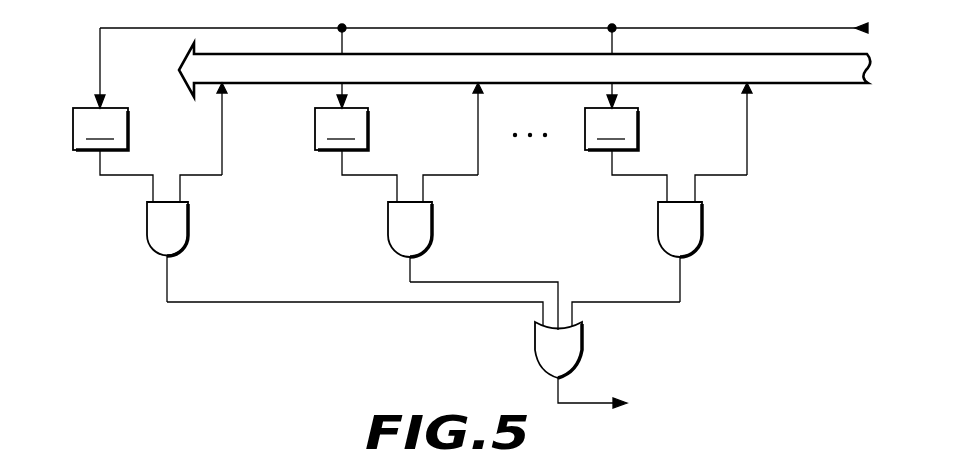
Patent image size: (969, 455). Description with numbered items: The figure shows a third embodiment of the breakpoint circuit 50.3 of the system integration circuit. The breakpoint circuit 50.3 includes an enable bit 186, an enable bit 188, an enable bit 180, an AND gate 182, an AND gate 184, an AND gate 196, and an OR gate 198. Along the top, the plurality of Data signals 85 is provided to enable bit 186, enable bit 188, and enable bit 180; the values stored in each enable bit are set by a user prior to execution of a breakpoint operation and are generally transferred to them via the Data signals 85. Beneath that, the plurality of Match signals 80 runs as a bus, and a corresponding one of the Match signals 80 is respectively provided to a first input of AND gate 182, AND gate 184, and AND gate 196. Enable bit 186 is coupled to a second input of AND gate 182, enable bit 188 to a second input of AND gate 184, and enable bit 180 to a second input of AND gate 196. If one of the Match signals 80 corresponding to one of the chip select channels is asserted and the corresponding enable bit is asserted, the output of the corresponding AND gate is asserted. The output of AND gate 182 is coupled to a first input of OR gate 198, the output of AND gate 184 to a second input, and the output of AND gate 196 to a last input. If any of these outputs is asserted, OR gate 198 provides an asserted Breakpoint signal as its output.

The Data signals 85 is at (590, 28).
The Match signals 80 is at (838, 83).
The enable bit 186 is at (143, 129).
The enable bit 188 is at (384, 129).
The enable bit 180 is at (654, 129).
The AND gate 182 is at (190, 220).
The AND gate 184 is at (433, 221).
The AND gate 196 is at (703, 221).
The OR gate 198 is at (583, 341).
The breakpoint circuit 50.3 is at (118, 330).